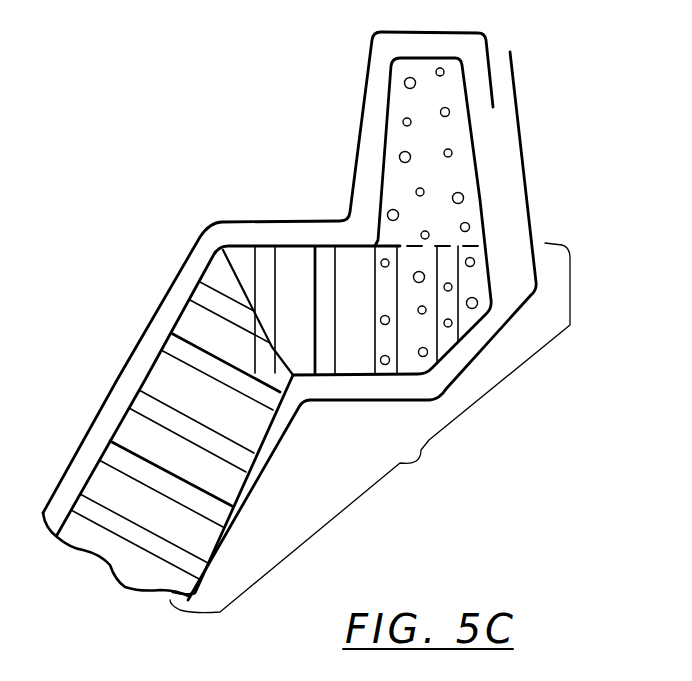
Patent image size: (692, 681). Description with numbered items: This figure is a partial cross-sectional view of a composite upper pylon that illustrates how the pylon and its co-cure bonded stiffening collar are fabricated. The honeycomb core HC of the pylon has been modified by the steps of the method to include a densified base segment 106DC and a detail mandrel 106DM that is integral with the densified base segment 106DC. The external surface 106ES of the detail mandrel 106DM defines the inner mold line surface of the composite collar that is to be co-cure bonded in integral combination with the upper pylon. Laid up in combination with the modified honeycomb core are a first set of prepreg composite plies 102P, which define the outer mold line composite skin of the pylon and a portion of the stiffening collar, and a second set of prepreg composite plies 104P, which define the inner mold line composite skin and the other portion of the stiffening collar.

The first set of prepreg composite plies 102P is at (360, 115).
The second set of prepreg composite plies 104P is at (528, 193).
The external surface of the detail mandrel 106ES is at (473, 135).
The detail mandrel 106DM is at (448, 172).
The densified base segment 106DC is at (413, 325).
The honeycomb core HC is at (370, 428).